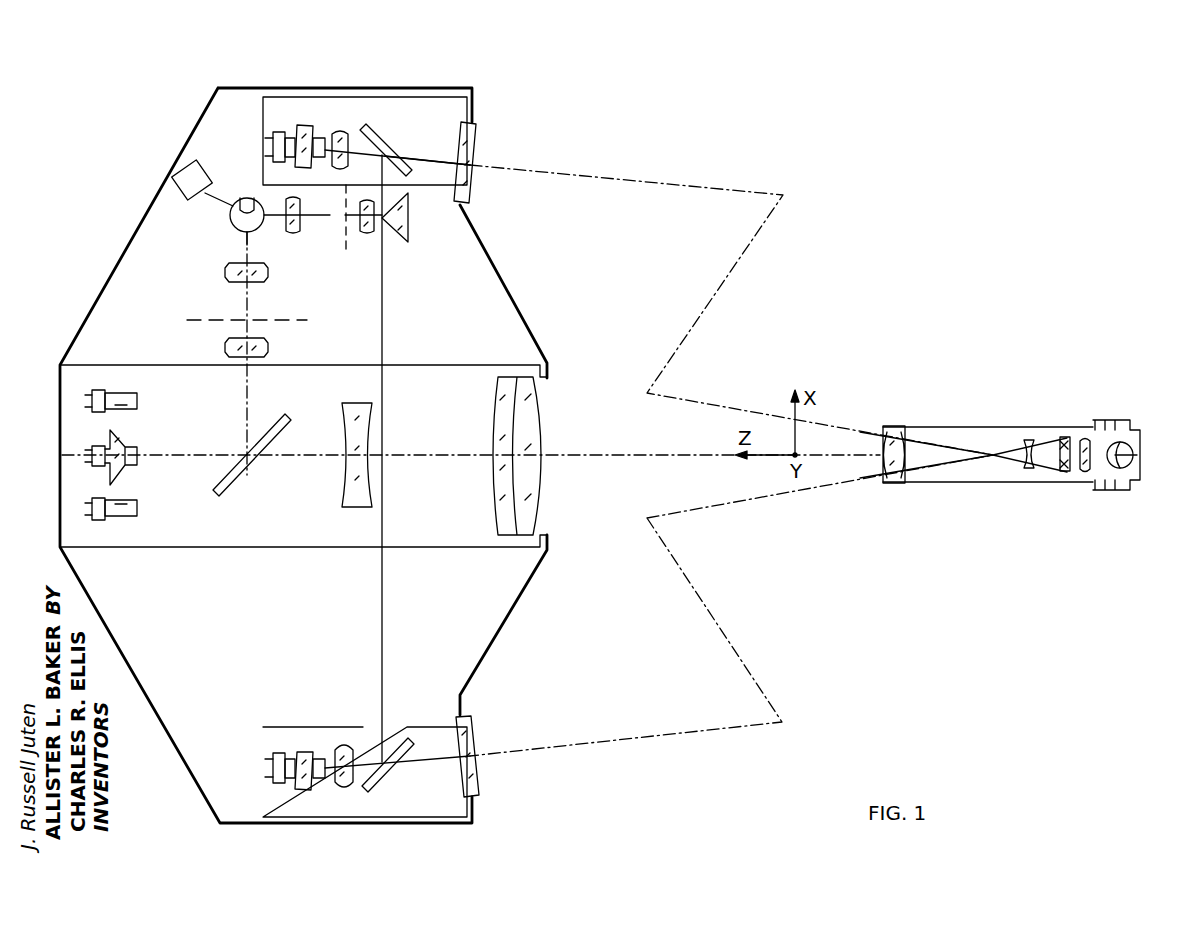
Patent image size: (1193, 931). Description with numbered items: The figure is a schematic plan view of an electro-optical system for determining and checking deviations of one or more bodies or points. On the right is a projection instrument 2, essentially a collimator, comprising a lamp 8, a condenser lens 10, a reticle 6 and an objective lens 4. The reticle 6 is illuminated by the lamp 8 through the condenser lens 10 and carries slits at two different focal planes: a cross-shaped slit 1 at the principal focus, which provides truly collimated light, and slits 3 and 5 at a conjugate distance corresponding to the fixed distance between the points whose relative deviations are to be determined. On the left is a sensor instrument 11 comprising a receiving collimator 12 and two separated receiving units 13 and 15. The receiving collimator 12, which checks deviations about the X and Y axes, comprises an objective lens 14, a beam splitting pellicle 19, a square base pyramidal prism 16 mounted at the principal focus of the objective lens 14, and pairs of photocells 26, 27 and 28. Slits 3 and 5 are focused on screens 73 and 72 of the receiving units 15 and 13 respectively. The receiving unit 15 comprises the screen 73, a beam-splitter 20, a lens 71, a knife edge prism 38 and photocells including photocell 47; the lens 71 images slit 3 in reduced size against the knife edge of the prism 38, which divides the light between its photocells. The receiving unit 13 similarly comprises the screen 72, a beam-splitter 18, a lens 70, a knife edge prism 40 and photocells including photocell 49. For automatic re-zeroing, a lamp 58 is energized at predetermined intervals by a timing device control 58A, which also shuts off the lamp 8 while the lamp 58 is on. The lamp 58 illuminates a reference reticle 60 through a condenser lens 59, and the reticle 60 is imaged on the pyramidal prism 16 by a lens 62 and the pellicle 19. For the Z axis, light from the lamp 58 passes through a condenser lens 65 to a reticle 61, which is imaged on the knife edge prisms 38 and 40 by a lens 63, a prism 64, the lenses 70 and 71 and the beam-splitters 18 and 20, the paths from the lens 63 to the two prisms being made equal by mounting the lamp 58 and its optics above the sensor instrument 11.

The slit 1 is at (1060, 458).
The projection instrument 2 is at (912, 484).
The slit 3 is at (1068, 450).
The objective lens 4 is at (1027, 450).
The slit 5 is at (1068, 470).
The reticle 6 is at (1065, 440).
The lamp 8 is at (1127, 460).
The condenser lens 10 is at (1086, 472).
The sensor instrument 11 is at (505, 280).
The receiving collimator 12 is at (330, 528).
The receiving unit 13 is at (262, 120).
The objective lens 14 is at (500, 485).
The receiving unit 15 is at (262, 740).
The square base pyramidal prism 16 is at (110, 445).
The beam-splitter 18 is at (386, 156).
The beam splitting pellicle 19 is at (255, 462).
The beam-splitter 20 is at (392, 770).
The photocell 26 is at (138, 402).
The photocell 27 is at (138, 510).
The photocell 28 is at (137, 452).
The knife edge prism 38 is at (300, 788).
The knife edge prism 40 is at (303, 130).
The photocell 47 is at (316, 760).
The photocell 49 is at (338, 135).
The lamp 58 is at (242, 200).
The timing device control 58A is at (182, 175).
The condenser lens 59 is at (235, 265).
The reference reticle 60 is at (215, 318).
The reticle 61 is at (347, 250).
The lens 62 is at (228, 348).
The lens 63 is at (375, 232).
The prism 64 is at (410, 222).
The condenser lens 65 is at (300, 232).
The lens 70 is at (384, 140).
The lens 71 is at (343, 788).
The screen 72 is at (470, 152).
The screen 73 is at (478, 760).